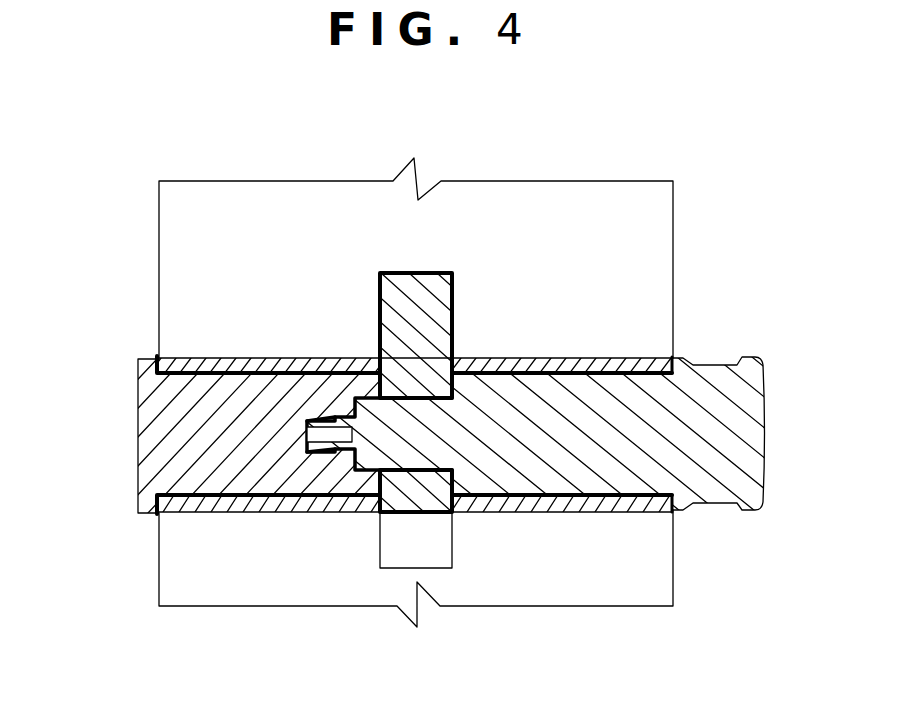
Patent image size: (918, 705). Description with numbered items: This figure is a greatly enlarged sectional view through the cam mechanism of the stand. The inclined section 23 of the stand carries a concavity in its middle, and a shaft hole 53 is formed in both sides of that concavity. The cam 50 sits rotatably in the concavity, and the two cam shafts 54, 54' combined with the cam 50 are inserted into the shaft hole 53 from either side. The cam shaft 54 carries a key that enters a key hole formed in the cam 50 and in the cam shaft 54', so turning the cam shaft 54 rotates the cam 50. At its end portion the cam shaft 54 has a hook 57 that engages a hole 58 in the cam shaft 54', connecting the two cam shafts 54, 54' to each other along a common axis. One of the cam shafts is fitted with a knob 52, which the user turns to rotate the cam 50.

The inclined section 23 is at (649, 238).
The cam 50 is at (402, 288).
The knob 52 is at (722, 483).
The shaft hole 53 is at (263, 378).
The cam shaft 54 is at (535, 382).
The cam shaft 54' is at (260, 436).
The hook 57 is at (312, 422).
The hole 58 is at (322, 418).